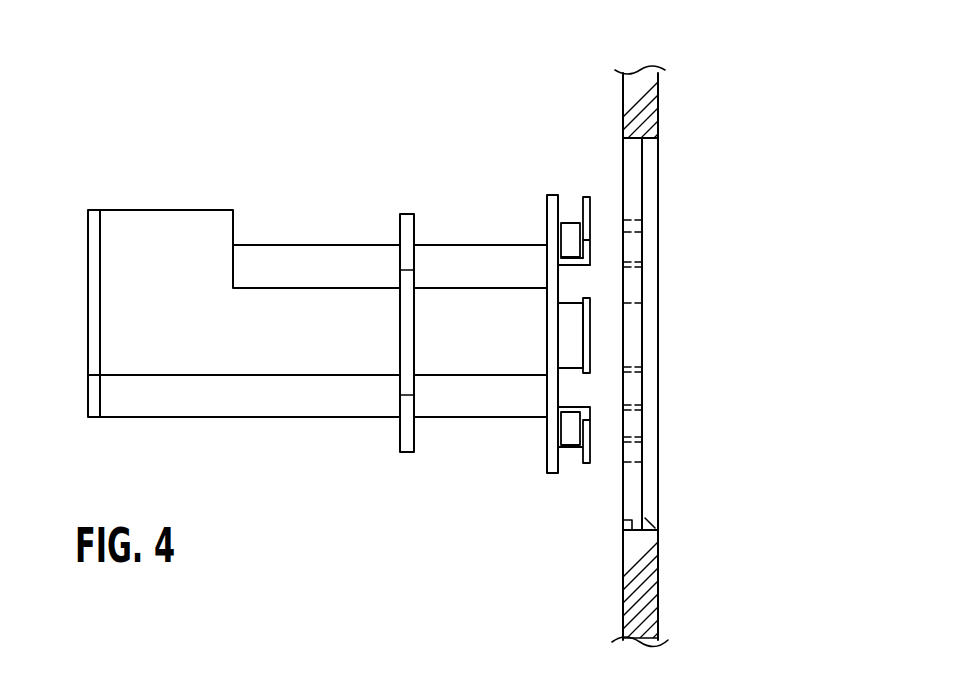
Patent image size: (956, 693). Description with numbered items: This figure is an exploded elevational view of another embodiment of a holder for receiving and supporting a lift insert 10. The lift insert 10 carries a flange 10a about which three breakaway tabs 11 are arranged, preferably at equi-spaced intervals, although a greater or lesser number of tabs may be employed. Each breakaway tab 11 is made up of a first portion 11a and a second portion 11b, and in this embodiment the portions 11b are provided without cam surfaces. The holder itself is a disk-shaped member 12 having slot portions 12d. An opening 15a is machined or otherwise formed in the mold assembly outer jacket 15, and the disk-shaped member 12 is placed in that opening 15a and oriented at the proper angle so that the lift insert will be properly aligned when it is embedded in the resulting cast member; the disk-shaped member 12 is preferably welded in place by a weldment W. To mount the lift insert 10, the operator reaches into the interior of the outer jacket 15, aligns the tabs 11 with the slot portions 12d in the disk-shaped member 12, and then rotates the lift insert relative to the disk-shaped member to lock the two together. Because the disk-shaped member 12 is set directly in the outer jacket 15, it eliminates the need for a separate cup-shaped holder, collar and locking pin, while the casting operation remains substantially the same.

The lift insert 10 is at (380, 101).
The flange 10a is at (552, 475).
The breakaway tabs 11 is at (546, 318).
The portion of breakaway tab 11a is at (570, 217).
The portion of breakaway tab 11b is at (590, 212).
The disk-shaped member 12 is at (745, 419).
The slot portions 12d is at (650, 423).
The weldment W is at (655, 143).
The mold assembly outer jacket 15 is at (657, 608).
The opening 15a is at (632, 524).